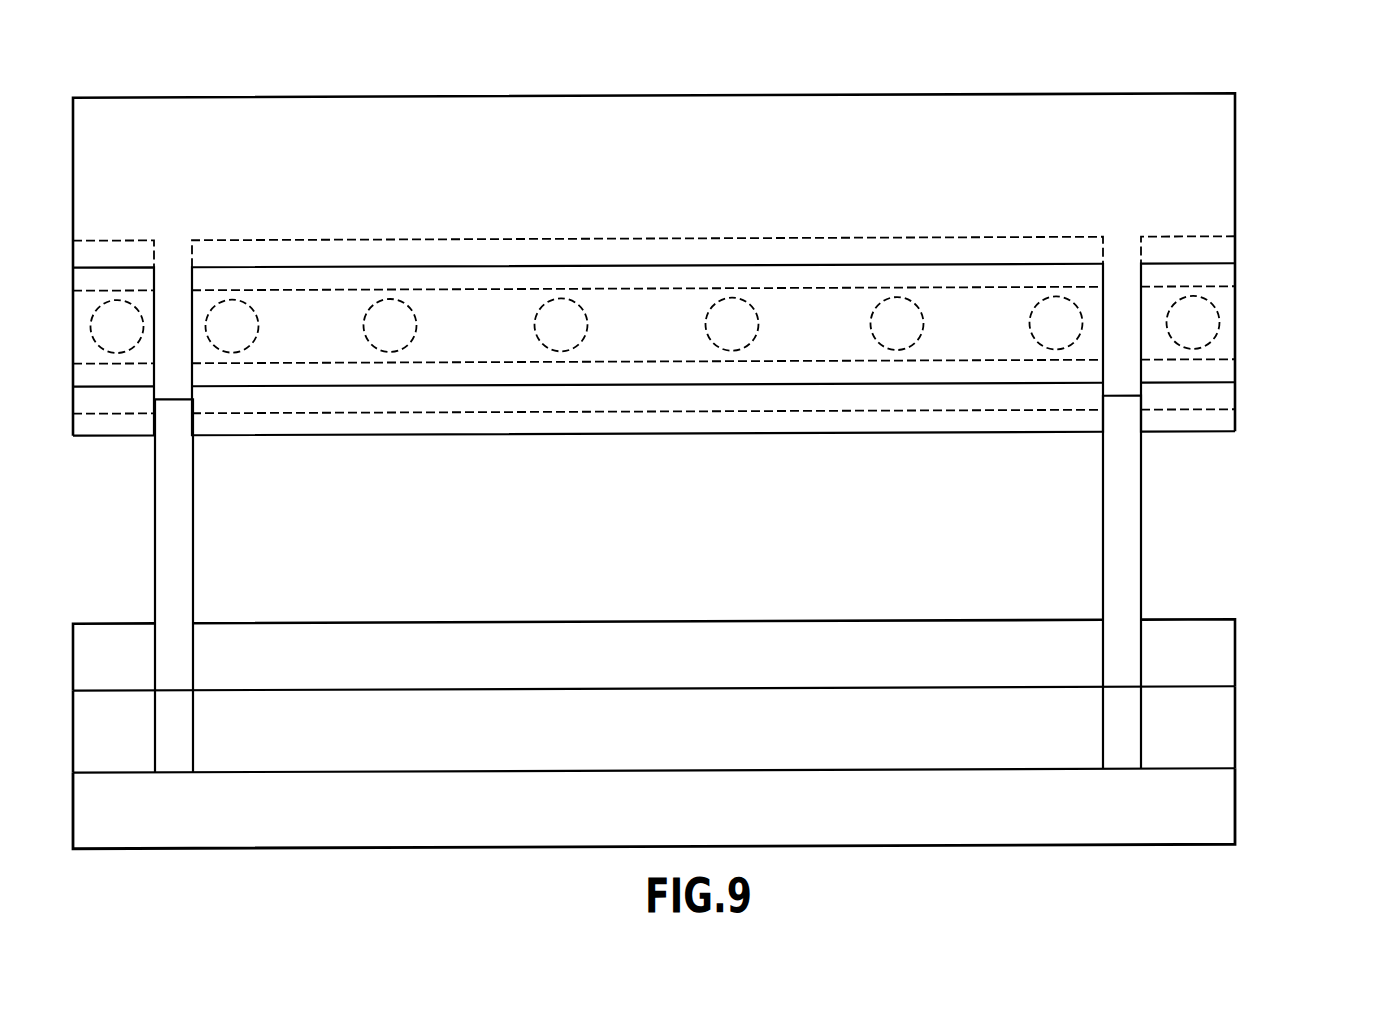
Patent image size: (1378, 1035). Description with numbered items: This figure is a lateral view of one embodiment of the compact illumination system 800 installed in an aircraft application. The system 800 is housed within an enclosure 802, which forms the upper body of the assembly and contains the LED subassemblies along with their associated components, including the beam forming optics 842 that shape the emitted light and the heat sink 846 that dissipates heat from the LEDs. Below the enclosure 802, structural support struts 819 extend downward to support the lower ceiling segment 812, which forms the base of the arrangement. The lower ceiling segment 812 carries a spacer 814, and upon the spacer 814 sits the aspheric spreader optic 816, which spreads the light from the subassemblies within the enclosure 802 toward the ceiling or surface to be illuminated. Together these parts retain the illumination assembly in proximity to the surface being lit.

The compact illumination system 800 is at (1258, 90).
The enclosure 802 is at (523, 117).
The lower ceiling segment 812 is at (450, 834).
The spacer 814 is at (765, 708).
The aspheric spreader optic 816 is at (595, 644).
The structural support strut 819 is at (178, 576).
The beam forming optics 842 is at (388, 403).
The heat sink 846 is at (132, 374).